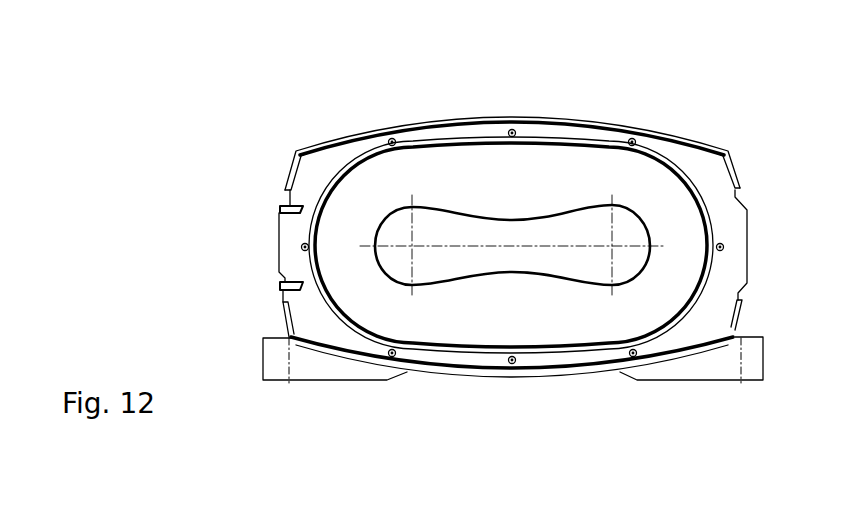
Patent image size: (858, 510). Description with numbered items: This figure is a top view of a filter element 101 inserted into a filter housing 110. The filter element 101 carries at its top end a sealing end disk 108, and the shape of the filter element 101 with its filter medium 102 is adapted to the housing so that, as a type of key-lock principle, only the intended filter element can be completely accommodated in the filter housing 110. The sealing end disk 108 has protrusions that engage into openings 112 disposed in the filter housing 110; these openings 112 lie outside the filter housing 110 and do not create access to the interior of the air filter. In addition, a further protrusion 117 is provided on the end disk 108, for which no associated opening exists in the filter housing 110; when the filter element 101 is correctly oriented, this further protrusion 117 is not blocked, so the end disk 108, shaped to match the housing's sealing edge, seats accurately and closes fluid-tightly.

The filter element 101 is at (240, 212).
The filter medium 102 is at (531, 172).
The sealing end disk 108 is at (717, 165).
The filter housing 110 is at (288, 168).
The openings 112 is at (736, 321).
The further protrusions 117 is at (278, 260).